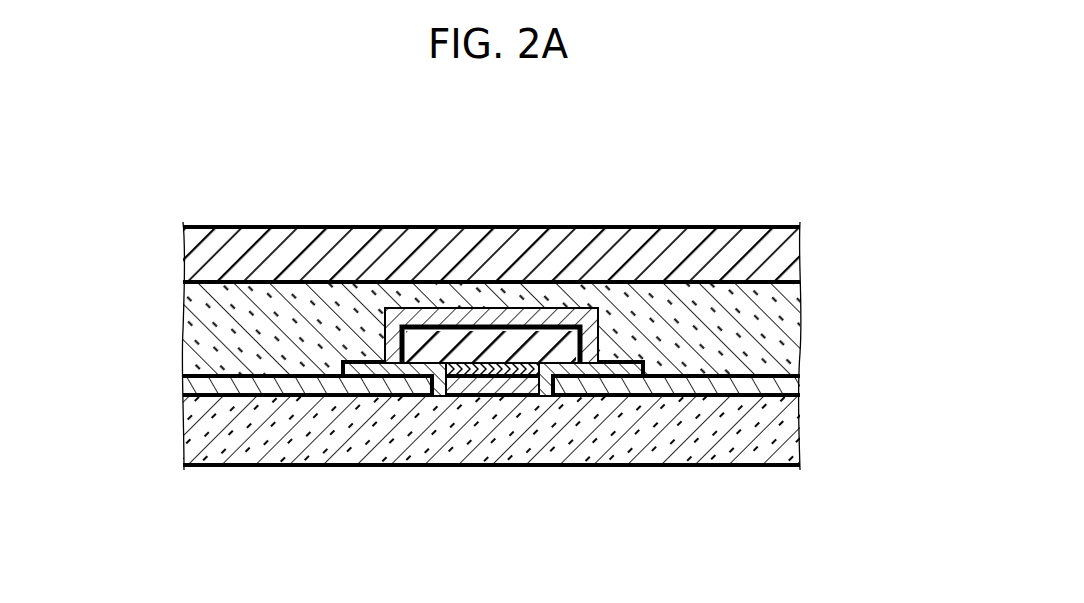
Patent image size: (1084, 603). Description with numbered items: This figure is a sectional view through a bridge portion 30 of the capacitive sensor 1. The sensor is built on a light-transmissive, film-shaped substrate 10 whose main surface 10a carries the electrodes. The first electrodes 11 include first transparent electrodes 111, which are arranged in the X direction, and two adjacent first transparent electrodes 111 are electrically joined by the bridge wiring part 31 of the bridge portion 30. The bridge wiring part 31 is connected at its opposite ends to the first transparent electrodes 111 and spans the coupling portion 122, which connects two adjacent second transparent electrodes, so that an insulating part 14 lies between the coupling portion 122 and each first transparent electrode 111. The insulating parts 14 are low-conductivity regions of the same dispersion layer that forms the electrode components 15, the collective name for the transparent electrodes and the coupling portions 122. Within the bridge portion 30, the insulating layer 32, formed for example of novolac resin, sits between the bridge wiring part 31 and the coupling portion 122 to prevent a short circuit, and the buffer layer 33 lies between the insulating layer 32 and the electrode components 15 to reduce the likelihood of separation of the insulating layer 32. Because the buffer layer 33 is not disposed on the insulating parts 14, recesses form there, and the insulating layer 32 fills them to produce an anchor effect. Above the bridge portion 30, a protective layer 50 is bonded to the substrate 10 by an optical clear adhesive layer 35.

The capacitive sensor 1 is at (756, 185).
The substrate 10 is at (787, 433).
The main surface 10a is at (688, 388).
The first electrodes 11 is at (496, 385).
The first transparent electrodes 111 is at (787, 384).
The insulating parts 14 is at (443, 383).
The coupling portion 122 is at (493, 385).
The electrode components 15 is at (693, 365).
The bridge portion 30 is at (507, 241).
The bridge wiring part 31 is at (466, 320).
The insulating layer 32 is at (488, 346).
The buffer layer 33 is at (500, 358).
The optical clear adhesive layer 35 is at (787, 329).
The protective layer 50 is at (787, 253).